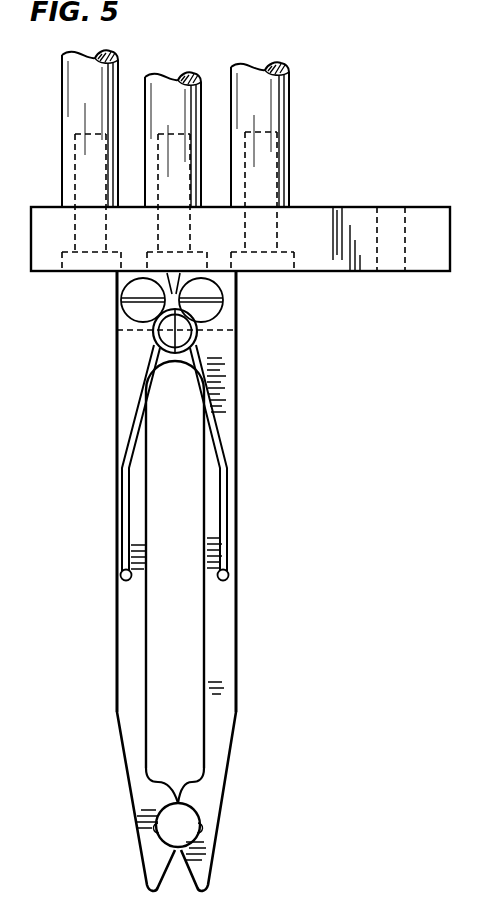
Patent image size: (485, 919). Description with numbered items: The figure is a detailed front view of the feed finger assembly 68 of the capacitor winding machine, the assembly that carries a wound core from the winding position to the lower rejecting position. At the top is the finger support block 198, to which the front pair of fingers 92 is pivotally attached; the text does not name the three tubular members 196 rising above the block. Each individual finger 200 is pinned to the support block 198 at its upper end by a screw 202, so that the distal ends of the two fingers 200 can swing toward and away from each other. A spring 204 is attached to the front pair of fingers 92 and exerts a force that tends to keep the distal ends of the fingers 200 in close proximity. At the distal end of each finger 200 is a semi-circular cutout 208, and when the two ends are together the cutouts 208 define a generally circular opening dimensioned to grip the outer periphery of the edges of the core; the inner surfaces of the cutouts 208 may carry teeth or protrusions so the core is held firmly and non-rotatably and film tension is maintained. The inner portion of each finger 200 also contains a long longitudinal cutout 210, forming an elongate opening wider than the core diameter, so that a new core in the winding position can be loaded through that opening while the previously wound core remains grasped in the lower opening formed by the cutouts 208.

The feed finger assembly 68 is at (252, 517).
The front pair of fingers 92 is at (227, 740).
The tubes 196 is at (409, 3).
The finger support block 198 is at (316, 240).
The finger 200 is at (130, 682).
The screw 202 is at (130, 318).
The spring 204 is at (217, 428).
The semi-circular cutout 208 is at (157, 828).
The longitudinal cutout 210 is at (146, 627).